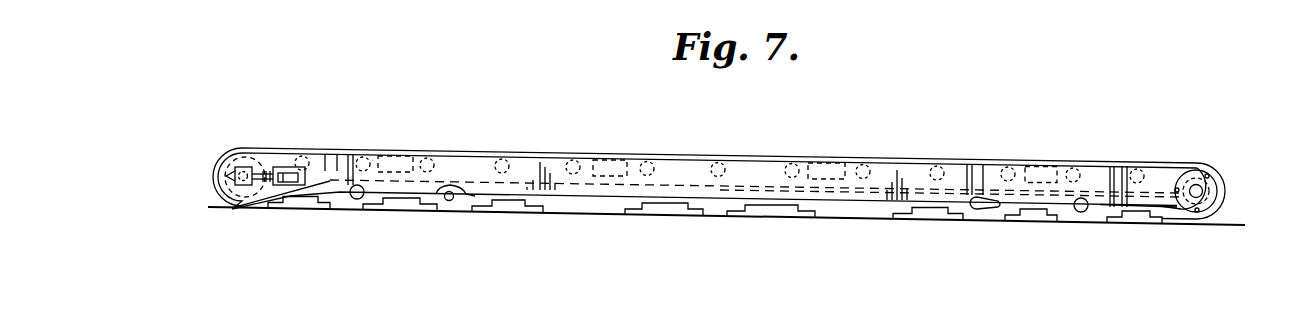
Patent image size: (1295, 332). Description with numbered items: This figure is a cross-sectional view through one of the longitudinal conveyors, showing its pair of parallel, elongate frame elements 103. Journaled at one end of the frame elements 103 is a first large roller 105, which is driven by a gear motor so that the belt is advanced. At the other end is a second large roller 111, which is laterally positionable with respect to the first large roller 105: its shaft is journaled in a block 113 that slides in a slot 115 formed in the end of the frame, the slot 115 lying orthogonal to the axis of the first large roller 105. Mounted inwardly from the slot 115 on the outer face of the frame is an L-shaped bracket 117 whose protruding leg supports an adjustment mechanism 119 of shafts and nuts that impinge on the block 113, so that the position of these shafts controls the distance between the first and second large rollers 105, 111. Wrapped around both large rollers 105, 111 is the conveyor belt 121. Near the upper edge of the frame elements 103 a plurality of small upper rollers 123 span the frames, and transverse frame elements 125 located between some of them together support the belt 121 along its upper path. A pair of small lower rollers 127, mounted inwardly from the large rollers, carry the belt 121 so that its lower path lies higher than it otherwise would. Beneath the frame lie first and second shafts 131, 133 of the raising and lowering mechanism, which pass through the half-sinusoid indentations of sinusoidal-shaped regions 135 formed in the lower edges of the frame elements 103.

The frame element 103 is at (1095, 168).
The first large roller 105 is at (1206, 171).
The second large roller 111 is at (240, 160).
The block 113 is at (243, 185).
The slot 115 is at (227, 177).
The L-shaped bracket 117 is at (283, 168).
The adjustment mechanism 119 is at (298, 185).
The conveyor belt 121 is at (842, 157).
The small upper roller 123 is at (362, 156).
The transverse frame element 125 is at (390, 156).
The small lower roller 127 is at (357, 199).
The first shaft 131 is at (445, 207).
The second shaft 133 is at (978, 210).
The sinusoidal-shaped region 135 is at (452, 201).